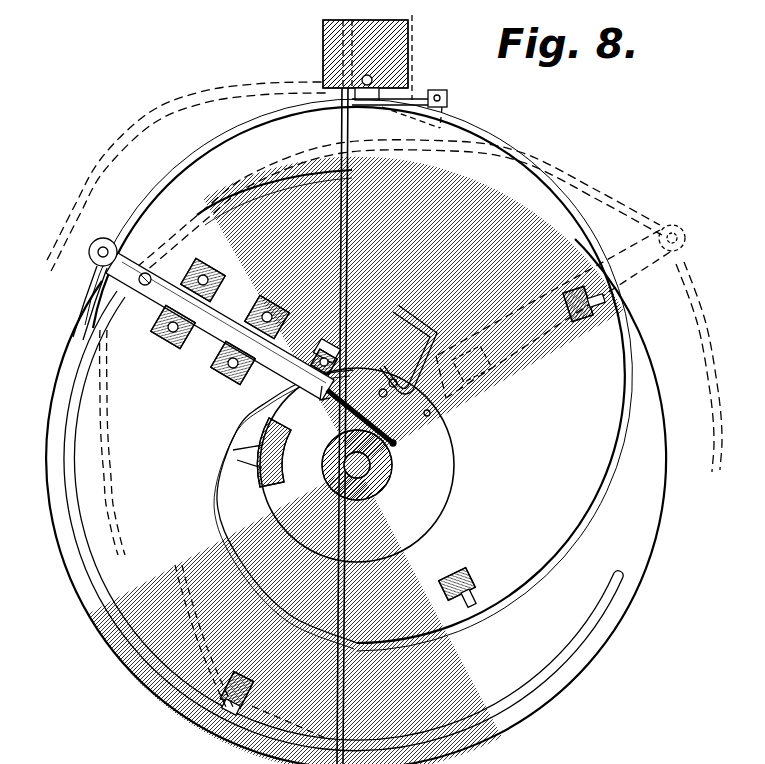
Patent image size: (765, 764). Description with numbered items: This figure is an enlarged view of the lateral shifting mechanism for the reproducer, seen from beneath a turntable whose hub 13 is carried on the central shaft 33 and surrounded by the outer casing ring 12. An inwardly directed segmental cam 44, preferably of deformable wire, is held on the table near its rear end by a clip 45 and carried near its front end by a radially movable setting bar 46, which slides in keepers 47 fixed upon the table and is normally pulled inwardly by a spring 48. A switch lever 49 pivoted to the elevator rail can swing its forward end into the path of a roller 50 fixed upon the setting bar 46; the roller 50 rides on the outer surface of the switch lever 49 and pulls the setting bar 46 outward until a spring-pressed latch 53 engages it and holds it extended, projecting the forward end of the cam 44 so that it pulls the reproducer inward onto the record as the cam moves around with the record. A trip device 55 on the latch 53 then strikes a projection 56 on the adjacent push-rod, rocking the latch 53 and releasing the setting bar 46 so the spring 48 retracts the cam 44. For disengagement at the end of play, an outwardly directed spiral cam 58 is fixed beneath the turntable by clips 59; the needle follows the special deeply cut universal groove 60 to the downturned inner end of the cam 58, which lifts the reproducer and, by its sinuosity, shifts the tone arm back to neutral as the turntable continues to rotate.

The casing ring 12 is at (356, 460).
The hub 13 is at (382, 468).
The shaft 33 is at (348, 272).
The segmental cam 44 is at (230, 190).
The clip 45 is at (224, 718).
The setting bar 46 is at (227, 311).
The keepers 47 is at (180, 345).
The spring 48 is at (385, 432).
The switch lever 49 is at (296, 108).
The roller 50 is at (103, 238).
The spring-pressed latch 53 is at (332, 355).
The trip device 55 is at (415, 316).
The projection 56 is at (349, 298).
The spiral cam 58 is at (620, 392).
The clips 59 is at (258, 450).
The universal groove 60 is at (446, 506).